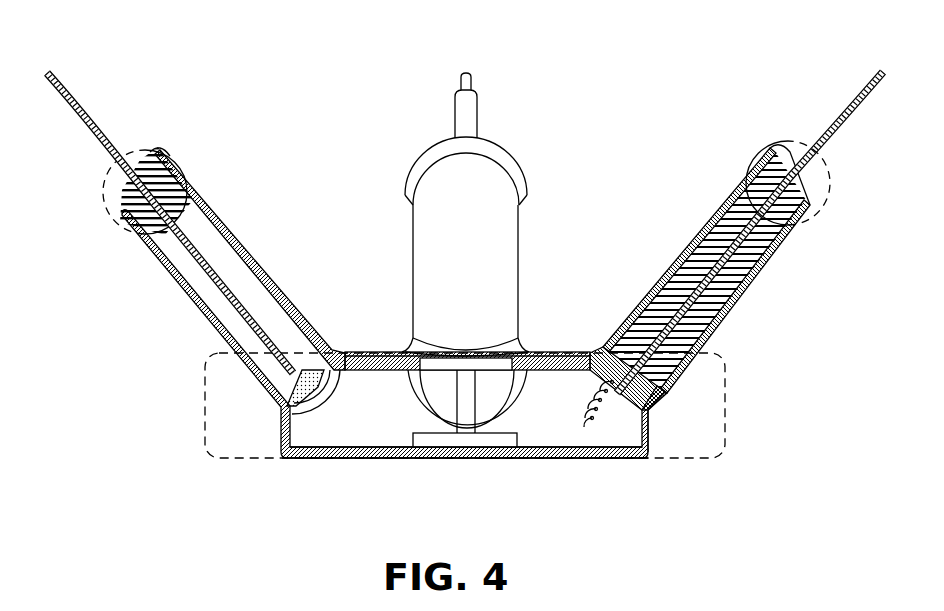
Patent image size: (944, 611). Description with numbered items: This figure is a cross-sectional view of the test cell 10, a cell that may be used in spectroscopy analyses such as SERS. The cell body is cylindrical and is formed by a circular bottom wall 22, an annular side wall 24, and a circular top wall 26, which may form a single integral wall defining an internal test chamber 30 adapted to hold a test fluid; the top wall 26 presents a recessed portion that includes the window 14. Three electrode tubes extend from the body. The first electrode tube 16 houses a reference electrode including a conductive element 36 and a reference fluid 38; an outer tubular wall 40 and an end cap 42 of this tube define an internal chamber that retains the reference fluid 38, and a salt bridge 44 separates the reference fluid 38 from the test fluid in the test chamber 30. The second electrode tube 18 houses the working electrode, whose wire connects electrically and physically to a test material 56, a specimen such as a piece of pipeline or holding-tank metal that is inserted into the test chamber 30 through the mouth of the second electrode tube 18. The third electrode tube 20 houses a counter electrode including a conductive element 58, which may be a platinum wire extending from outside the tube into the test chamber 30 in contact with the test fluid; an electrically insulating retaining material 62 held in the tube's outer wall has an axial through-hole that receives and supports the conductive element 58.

The test cell 10 is at (465, 271).
The window 14 is at (498, 360).
The first electrode tube 16 is at (356, 265).
The second electrode tube 18 is at (530, 242).
The third electrode tube 20 is at (733, 249).
The bottom wall 22 is at (558, 460).
The side wall 24 is at (648, 432).
The top wall 26 is at (338, 352).
The internal test chamber 30 is at (394, 420).
The conductive element 36 is at (223, 288).
The reference fluid 38 is at (177, 250).
The outer tubular wall 40 is at (248, 253).
The end cap 42 is at (137, 210).
The salt bridge 44 is at (325, 387).
The test material 56 is at (472, 447).
The conductive element 58 is at (717, 280).
The electrically insulating retaining material 62 is at (786, 266).